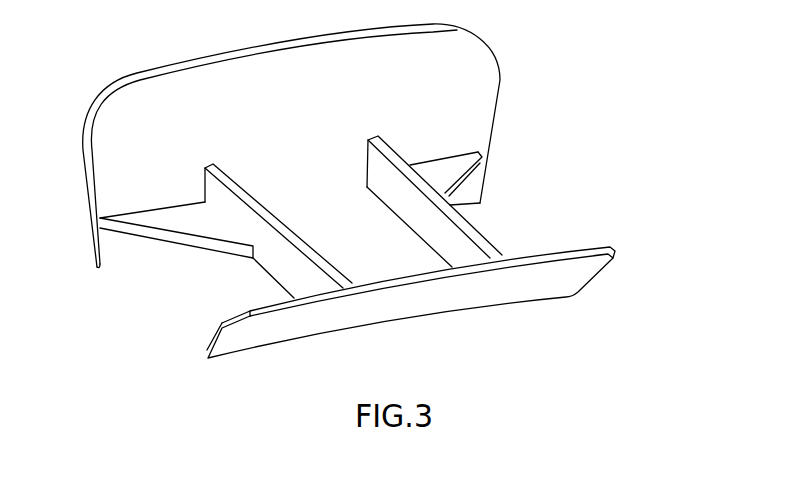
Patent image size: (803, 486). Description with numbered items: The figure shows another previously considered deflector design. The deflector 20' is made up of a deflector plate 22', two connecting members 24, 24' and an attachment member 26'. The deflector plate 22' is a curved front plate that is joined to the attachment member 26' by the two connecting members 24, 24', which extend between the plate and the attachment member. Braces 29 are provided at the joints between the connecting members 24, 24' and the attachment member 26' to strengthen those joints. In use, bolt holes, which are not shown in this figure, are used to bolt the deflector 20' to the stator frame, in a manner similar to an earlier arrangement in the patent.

The deflector 20' is at (382, 187).
The attachment member 26' is at (356, 139).
The braces 29 is at (198, 222).
The rib 24 is at (254, 251).
The connecting members 24' is at (500, 201).
The deflector plate 22' is at (414, 306).